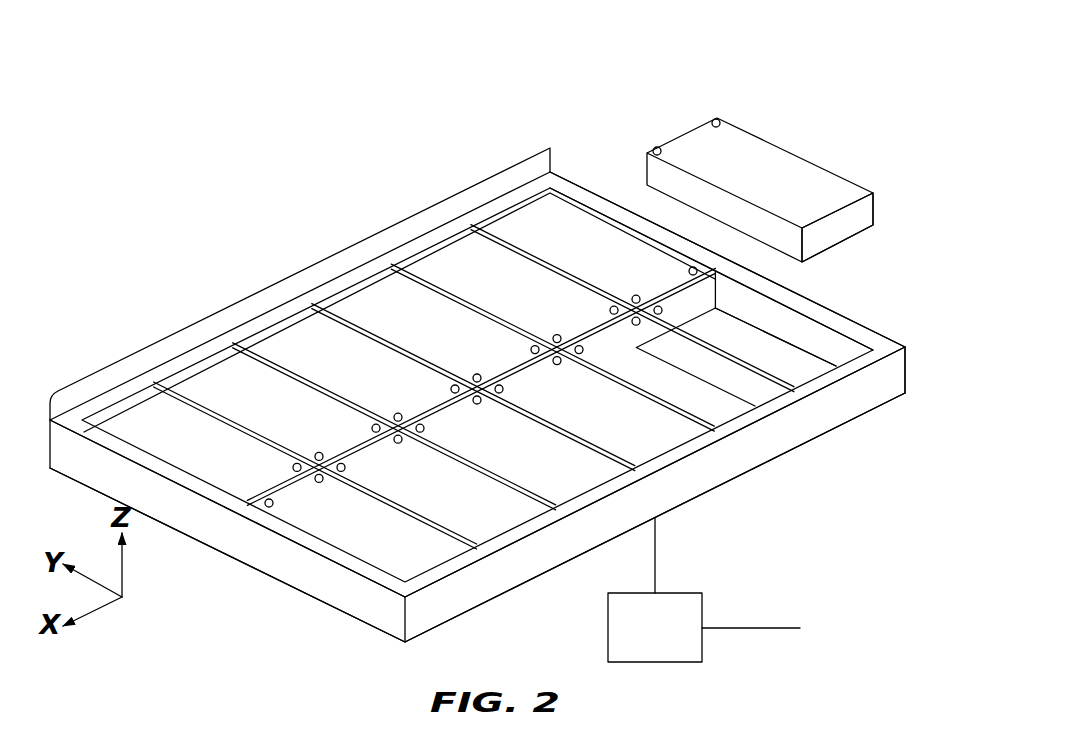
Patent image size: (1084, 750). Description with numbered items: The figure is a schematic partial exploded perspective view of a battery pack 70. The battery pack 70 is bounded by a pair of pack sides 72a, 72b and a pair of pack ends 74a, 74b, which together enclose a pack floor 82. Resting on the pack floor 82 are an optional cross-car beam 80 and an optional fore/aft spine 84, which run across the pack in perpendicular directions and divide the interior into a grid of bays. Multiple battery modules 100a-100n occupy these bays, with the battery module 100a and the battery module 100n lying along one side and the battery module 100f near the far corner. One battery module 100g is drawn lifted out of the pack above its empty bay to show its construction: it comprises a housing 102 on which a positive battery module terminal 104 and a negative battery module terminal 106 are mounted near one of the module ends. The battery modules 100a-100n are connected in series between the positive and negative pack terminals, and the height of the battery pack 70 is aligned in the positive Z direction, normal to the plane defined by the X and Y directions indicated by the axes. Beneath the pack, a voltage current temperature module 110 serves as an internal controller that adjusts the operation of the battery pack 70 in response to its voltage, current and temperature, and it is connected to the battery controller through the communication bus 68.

The battery pack 70 is at (307, 265).
The pack side 72a is at (200, 344).
The pack side 72b is at (697, 473).
The pack end 74a is at (293, 590).
The pack end 74b is at (877, 333).
The cross-car beam 80 is at (699, 302).
The pack floor 82 is at (802, 368).
The fore/aft spine 84 is at (723, 347).
The battery module 100a is at (183, 456).
The battery module 100n is at (385, 536).
The battery module 100f is at (620, 260).
The battery module 100g is at (724, 186).
The housing 102 is at (856, 178).
The positive battery module terminal 104 is at (653, 147).
The negative battery module terminal 106 is at (722, 112).
The voltage current temperature module 110 is at (608, 628).
The communication bus 68 is at (758, 628).